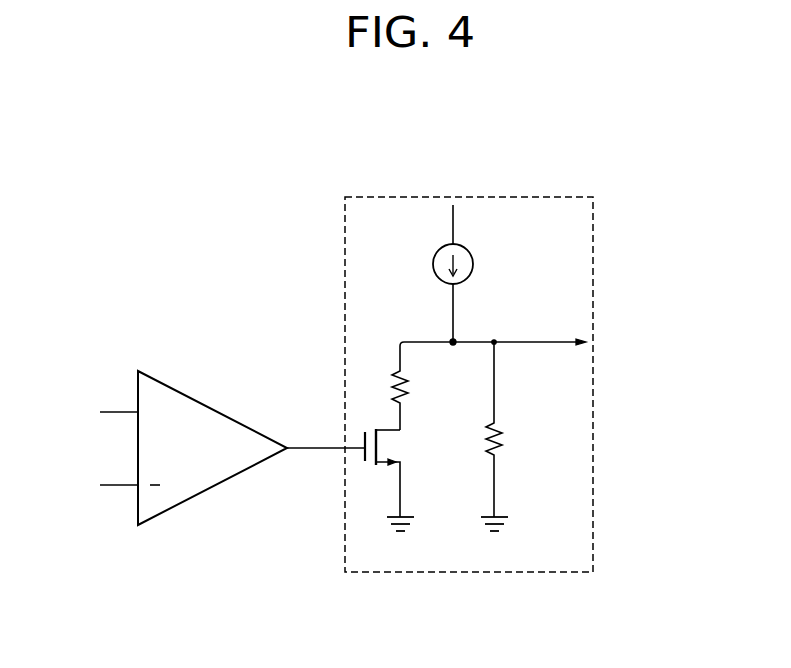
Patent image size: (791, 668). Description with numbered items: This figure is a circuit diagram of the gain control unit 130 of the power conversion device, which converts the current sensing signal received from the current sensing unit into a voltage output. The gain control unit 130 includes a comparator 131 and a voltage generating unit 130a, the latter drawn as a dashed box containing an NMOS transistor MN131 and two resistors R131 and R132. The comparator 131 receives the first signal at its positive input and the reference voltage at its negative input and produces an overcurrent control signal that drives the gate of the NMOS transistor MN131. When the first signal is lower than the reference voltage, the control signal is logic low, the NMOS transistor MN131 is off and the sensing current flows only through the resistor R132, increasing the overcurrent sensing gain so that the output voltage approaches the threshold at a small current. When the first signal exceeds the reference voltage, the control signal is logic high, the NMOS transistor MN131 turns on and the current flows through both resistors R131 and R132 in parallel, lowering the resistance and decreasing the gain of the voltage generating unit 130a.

The gain control unit 130 is at (412, 138).
The voltage generating unit 130a is at (593, 418).
The comparator 131 is at (220, 487).
The resistor R131 is at (428, 386).
The resistor R132 is at (522, 429).
The NMOS transistor MN131 is at (411, 461).